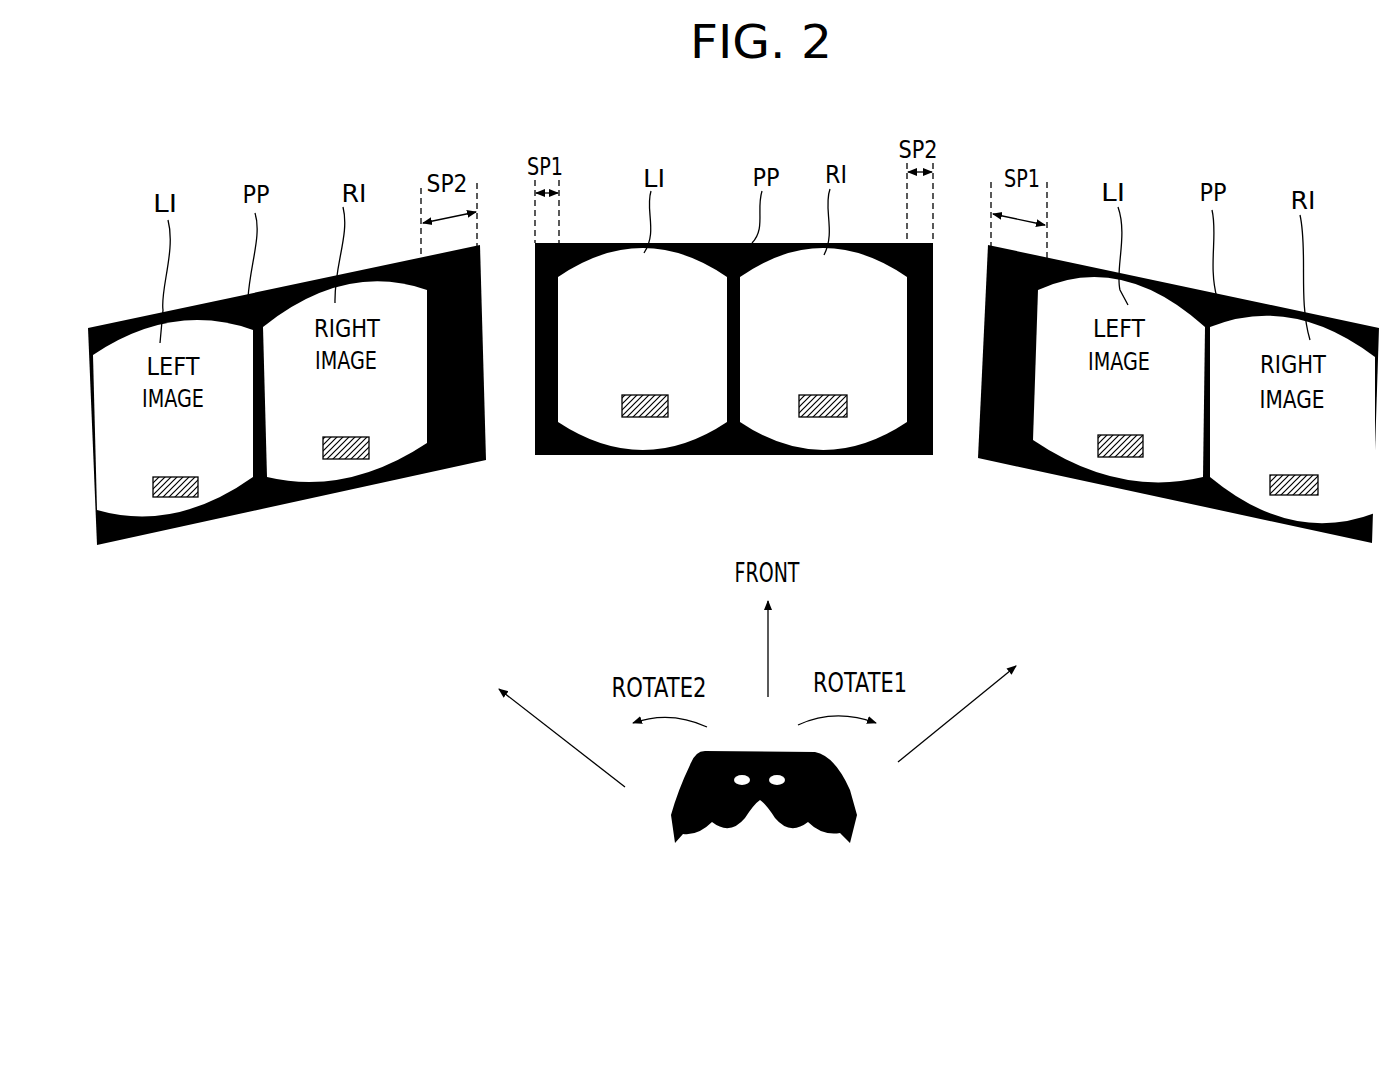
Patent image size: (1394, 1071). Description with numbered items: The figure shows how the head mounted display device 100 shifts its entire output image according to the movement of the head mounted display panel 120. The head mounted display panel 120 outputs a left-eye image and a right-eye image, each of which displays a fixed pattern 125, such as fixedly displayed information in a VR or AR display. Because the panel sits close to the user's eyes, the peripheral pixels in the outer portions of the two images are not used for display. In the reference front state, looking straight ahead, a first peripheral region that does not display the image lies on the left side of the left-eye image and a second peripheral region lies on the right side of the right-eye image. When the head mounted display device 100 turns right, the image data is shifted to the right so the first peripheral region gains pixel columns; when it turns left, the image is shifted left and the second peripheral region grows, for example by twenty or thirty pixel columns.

The head mounted display device 100 is at (805, 847).
The head mounted display panel 120 is at (718, 182).
The fixed pattern 125 is at (649, 418).